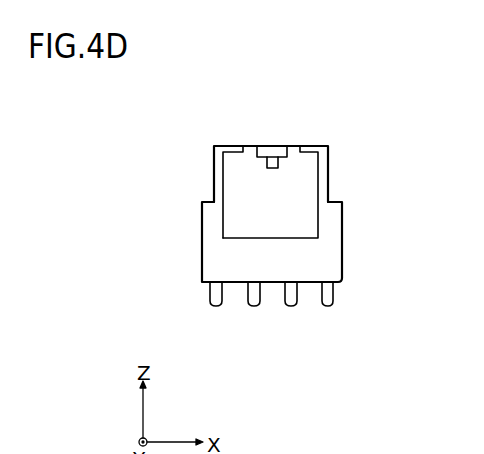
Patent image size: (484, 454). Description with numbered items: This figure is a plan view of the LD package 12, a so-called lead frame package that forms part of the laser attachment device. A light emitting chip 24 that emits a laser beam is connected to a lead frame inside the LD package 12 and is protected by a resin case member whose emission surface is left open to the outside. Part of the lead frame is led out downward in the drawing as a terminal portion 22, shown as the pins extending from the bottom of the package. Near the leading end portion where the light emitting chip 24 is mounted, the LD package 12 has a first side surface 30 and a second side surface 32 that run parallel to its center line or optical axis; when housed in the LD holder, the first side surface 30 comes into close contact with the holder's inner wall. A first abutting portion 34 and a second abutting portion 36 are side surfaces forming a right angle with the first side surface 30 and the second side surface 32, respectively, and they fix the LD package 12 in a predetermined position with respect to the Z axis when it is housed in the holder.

The LD package 12 is at (277, 195).
The terminal portion 22 is at (333, 296).
The light emitting chip 24 is at (273, 160).
The first side surface 30 is at (328, 155).
The second side surface 32 is at (214, 154).
The first abutting portion 34 is at (333, 200).
The second abutting portion 36 is at (209, 200).